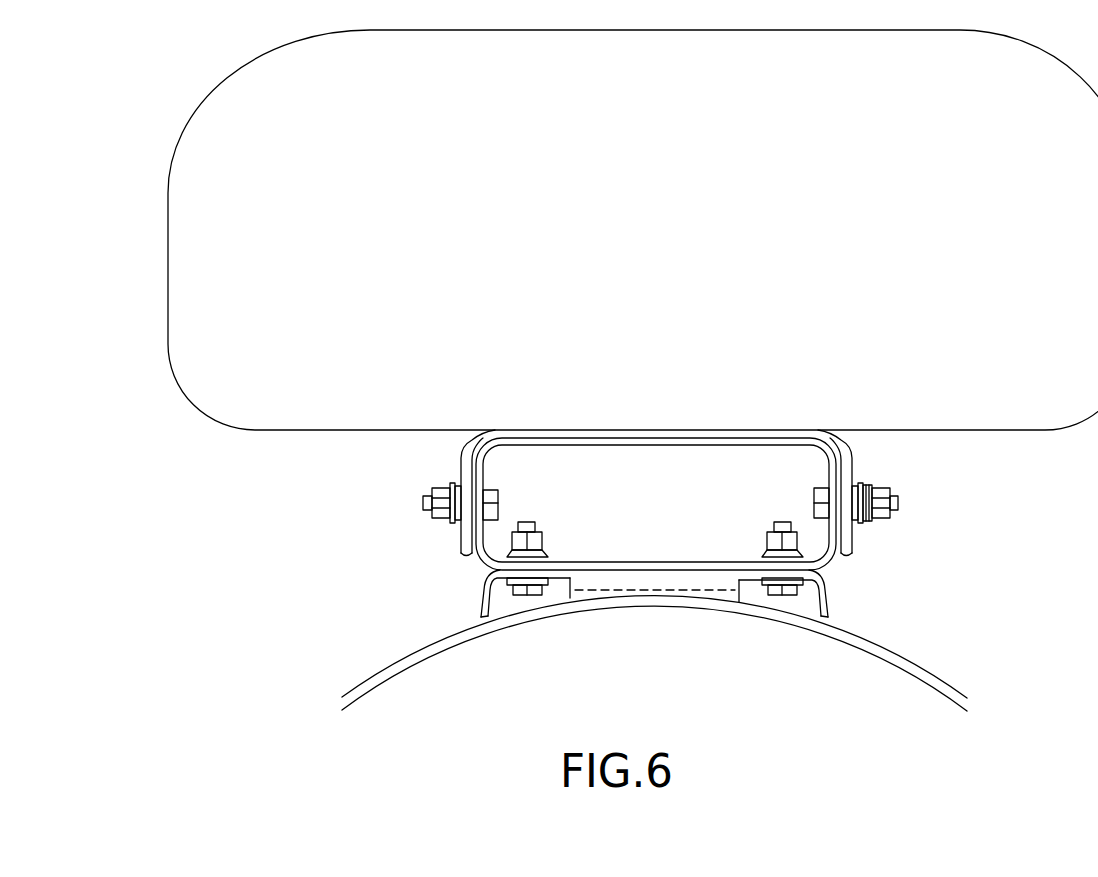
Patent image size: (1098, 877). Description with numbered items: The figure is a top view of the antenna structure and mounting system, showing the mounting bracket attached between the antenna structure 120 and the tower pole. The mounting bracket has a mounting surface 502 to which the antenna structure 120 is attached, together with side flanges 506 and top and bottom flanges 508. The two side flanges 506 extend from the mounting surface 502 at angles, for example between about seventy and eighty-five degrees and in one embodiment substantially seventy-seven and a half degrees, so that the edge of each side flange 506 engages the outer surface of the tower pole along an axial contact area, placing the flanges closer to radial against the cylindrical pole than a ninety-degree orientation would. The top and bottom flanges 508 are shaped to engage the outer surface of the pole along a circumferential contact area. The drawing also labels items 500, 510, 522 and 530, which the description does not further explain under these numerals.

The antenna structure 120 is at (168, 262).
The mounting assembly 500 is at (488, 672).
The mounting surface 502 is at (562, 573).
The side flanges 506 is at (488, 591).
The top and bottom flanges 508 is at (727, 576).
The fastener 510 is at (533, 538).
The curved support surface 522 is at (360, 685).
The strap 530 is at (461, 467).